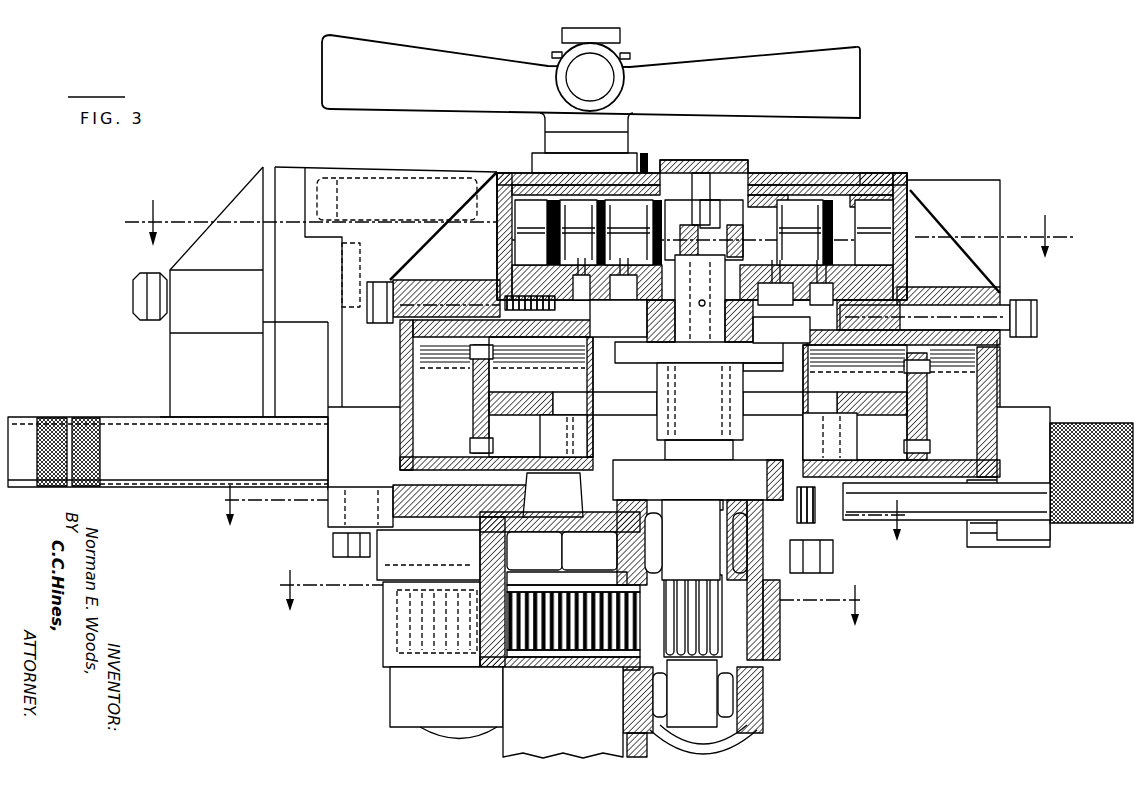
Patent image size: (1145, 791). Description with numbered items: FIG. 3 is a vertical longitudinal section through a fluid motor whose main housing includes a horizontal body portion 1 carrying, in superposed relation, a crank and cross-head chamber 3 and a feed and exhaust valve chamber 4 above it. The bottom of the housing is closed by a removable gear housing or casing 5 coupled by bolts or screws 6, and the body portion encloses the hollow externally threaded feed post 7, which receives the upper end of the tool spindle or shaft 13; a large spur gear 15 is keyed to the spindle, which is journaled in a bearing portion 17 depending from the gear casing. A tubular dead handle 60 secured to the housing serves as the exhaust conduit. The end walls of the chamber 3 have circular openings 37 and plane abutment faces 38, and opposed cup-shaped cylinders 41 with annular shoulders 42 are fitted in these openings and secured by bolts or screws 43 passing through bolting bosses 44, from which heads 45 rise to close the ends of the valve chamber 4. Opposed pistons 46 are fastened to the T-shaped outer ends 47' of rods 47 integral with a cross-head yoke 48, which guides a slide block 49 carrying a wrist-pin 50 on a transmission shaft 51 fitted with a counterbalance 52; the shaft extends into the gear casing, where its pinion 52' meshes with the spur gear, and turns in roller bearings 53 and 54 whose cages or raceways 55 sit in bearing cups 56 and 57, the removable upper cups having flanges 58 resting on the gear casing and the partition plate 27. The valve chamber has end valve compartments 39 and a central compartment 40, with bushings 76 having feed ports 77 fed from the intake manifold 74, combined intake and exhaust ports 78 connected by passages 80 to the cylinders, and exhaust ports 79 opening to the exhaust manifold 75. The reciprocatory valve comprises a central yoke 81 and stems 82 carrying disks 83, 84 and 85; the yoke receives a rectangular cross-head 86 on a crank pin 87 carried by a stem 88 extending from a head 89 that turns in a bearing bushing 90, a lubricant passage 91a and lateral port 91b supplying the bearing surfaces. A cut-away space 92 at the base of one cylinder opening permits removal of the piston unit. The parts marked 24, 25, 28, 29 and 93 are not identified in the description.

The horizontal body portion 1 is at (328, 440).
The crank and cross-head chamber 3 is at (700, 398).
The feed and exhaust valve chamber 4 is at (832, 153).
The gear housing or casing 5 is at (405, 640).
The bolts or screws 6 is at (333, 545).
The feed post 7 is at (561, 513).
The tool spindle or shaft 13 is at (133, 297).
The spur gear 15 is at (495, 670).
The bearing portion 17 is at (515, 745).
The lever stem 24 is at (545, 142).
The operating lever 25 is at (700, 75).
The partition plate 27 is at (567, 558).
The end block 28 is at (395, 560).
The housing block 29 is at (400, 600).
The circular openings 37 is at (527, 475).
The abutment faces 38 is at (948, 243).
The end valve compartments 39 is at (505, 175).
The eccentric head and lubricant containing compartment 40 is at (672, 176).
The cup-shaped cylinders 41 is at (1013, 398).
The annular external shoulder 42 is at (400, 478).
The bolts or screws 43 is at (366, 300).
The bolting bosses 44 is at (245, 185).
The heads 45 is at (262, 252).
The reciprocatory pistons 46 is at (473, 400).
The rods 47 is at (695, 403).
The T-shaped outer ends 47' is at (697, 402).
The cross-head yoke or guide 48 is at (700, 401).
The cross-head slide block 49 is at (657, 428).
The wrist-pin 50 is at (665, 452).
The transmission shaft 51 is at (690, 520).
The counterbalance 52 is at (563, 436).
The gear pinions 52' is at (560, 644).
The antifriction bearings 53 is at (660, 540).
The antifriction bearings 54 is at (625, 700).
The retaining cages or raceways 55 is at (735, 757).
The bearing cups 56 is at (778, 580).
The bearing cups 57 is at (765, 695).
The flanges 58 is at (790, 470).
The dead handle 60 is at (75, 417).
The intake manifold 74 is at (385, 182).
The exhaust manifold 75 is at (314, 273).
The bushings 76 is at (580, 190).
The feed ports 77 is at (918, 150).
The combined intake and exhaust port 78 is at (920, 168).
The exhaust port 79 is at (719, 232).
The passages 80 is at (978, 222).
The central yoke 81 is at (690, 215).
The stem 82 is at (646, 160).
The disk 83 is at (584, 163).
The disk 84 is at (782, 160).
The disk 85 is at (945, 177).
The rectangular cross-head 86 is at (705, 195).
The crank or wrist-pin 87 is at (750, 195).
The stem 88 is at (702, 300).
The head 89 is at (755, 372).
The bearing bushing 90 is at (754, 324).
The passage 91a is at (653, 363).
The lateral port 91b is at (618, 318).
The cut away portion 92 is at (560, 541).
The band 93 is at (860, 190).